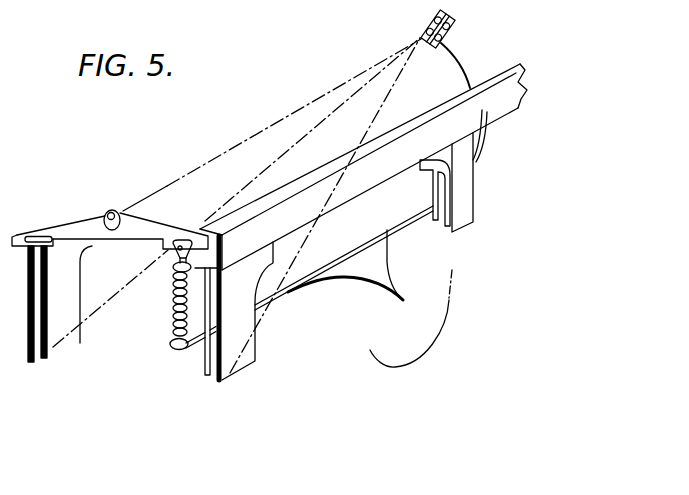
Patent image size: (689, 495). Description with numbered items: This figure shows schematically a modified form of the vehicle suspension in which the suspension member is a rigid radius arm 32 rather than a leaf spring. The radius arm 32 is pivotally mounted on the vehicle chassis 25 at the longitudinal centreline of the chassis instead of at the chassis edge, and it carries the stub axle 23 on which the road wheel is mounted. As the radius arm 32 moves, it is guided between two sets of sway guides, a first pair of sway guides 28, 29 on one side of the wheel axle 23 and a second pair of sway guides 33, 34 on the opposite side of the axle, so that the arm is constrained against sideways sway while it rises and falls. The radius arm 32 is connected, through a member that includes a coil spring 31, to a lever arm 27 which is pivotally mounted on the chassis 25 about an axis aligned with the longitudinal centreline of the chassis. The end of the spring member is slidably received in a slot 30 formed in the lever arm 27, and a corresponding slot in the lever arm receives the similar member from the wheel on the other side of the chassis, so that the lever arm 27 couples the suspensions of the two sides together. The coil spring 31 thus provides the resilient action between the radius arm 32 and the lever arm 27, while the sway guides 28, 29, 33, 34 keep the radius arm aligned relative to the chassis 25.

The stub axle 23 is at (391, 280).
The vehicle chassis 25 is at (483, 106).
The lever arm 27 is at (157, 230).
The sway guide 28 is at (226, 368).
The sway guide 29 is at (205, 372).
The slot 30 is at (46, 230).
The coil spring 31 is at (172, 306).
The radius arm 32 is at (289, 293).
The sway guide 33 is at (478, 203).
The sway guide 34 is at (433, 197).